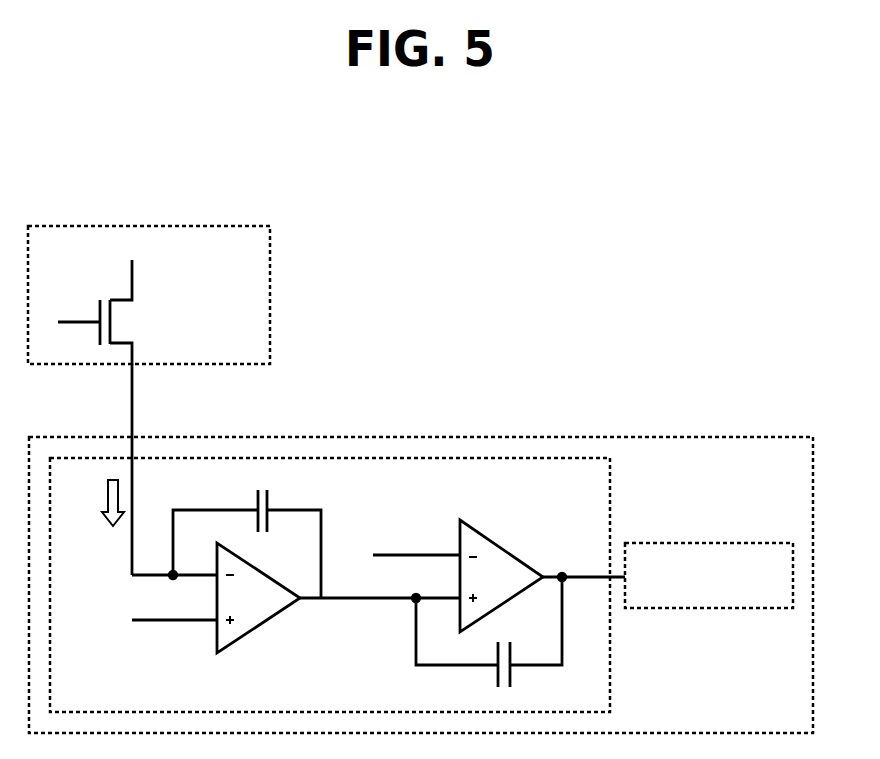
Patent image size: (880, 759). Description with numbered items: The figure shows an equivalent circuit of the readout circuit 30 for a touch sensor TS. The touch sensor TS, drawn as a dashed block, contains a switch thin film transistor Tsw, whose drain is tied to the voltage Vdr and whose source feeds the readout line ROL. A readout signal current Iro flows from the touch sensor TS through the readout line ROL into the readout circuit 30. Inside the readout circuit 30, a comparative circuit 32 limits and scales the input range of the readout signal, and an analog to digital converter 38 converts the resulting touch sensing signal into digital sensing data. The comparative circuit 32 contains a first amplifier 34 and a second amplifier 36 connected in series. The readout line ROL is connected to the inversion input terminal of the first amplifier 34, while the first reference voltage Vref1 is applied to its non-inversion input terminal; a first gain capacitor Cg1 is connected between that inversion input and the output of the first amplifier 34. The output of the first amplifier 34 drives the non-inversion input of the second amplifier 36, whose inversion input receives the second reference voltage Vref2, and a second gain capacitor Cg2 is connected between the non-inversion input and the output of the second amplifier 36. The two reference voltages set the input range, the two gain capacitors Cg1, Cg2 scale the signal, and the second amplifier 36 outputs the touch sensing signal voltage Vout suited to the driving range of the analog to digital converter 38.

The readout circuit 30 is at (488, 437).
The comparative circuit 32 is at (611, 523).
The first amplifier 34 is at (260, 627).
The second amplifier 36 is at (502, 545).
The analog to digital converter 38 is at (708, 543).
The touch sensor TS is at (270, 295).
The switch thin film transistor Tsw is at (114, 312).
The drive voltage Vdr is at (129, 247).
The readout line ROL is at (134, 390).
The readout signal current Iro is at (97, 503).
The first gain capacitor Cg1 is at (247, 532).
The second gain capacitor Cg2 is at (489, 644).
The first reference voltage Vref1 is at (141, 643).
The second reference voltage Vref2 is at (396, 540).
The touch sensing signal voltage Vout is at (576, 562).